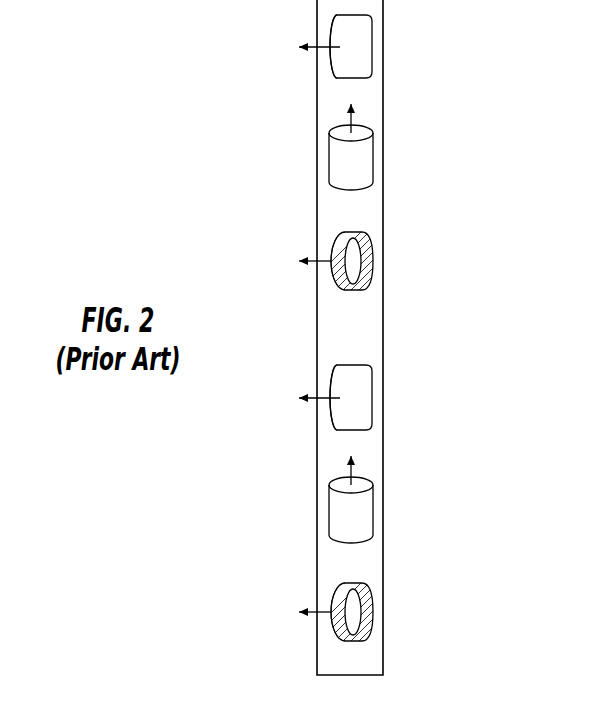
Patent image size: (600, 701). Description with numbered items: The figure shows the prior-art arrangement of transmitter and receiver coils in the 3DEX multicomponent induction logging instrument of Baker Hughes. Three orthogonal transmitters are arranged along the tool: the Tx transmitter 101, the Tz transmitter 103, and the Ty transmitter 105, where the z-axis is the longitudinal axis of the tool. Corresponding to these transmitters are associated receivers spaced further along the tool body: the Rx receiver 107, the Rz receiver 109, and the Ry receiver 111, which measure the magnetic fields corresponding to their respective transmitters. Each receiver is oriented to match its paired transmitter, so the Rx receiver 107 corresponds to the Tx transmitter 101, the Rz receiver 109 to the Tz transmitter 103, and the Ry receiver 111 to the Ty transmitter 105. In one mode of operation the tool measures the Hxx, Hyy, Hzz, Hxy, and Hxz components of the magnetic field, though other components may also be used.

The Tx transmitter 101 is at (447, 51).
The Tz transmitter 103 is at (447, 165).
The Ty transmitter 105 is at (447, 258).
The Rx receiver 107 is at (447, 406).
The Rz receiver 109 is at (447, 517).
The Ry receiver 111 is at (447, 612).